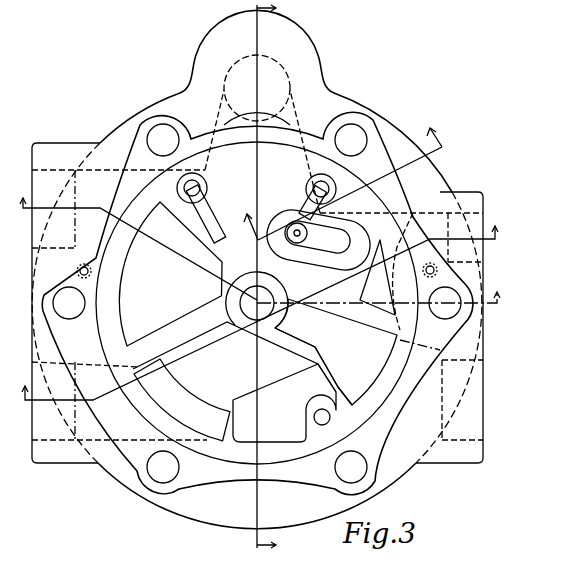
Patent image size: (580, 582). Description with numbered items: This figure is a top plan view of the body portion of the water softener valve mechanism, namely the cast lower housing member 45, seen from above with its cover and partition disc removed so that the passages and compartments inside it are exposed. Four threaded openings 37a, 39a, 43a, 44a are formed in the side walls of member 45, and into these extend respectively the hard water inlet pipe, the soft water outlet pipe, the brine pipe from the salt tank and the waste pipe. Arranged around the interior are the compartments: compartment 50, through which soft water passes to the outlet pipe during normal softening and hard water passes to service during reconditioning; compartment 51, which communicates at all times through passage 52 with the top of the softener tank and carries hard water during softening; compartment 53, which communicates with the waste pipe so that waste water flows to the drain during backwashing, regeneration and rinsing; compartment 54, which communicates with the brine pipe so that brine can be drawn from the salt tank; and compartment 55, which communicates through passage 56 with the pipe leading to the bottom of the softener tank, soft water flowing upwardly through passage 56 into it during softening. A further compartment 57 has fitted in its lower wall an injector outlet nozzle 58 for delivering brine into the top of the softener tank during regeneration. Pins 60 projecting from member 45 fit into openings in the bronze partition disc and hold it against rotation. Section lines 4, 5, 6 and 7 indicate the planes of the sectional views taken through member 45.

The opening 37a is at (50, 182).
The opening 39a is at (55, 432).
The opening 43a is at (478, 216).
The opening 44a is at (468, 434).
The lower housing member 45 is at (388, 122).
The compartment 50 is at (188, 406).
The compartment 51 is at (267, 380).
The passage 52 is at (294, 413).
The compartment 53 is at (346, 352).
The compartment 54 is at (423, 222).
The compartment 55 is at (193, 256).
The passage 56 is at (280, 75).
The compartment 57 is at (328, 222).
The injector outlet nozzle 58 is at (295, 222).
The pins 60 is at (192, 181).
The section line 4- 4 is at (272, 280).
The section line 5- 5 is at (299, 237).
The section line 6- 6 is at (259, 241).
The section line 7- 7 is at (339, 177).